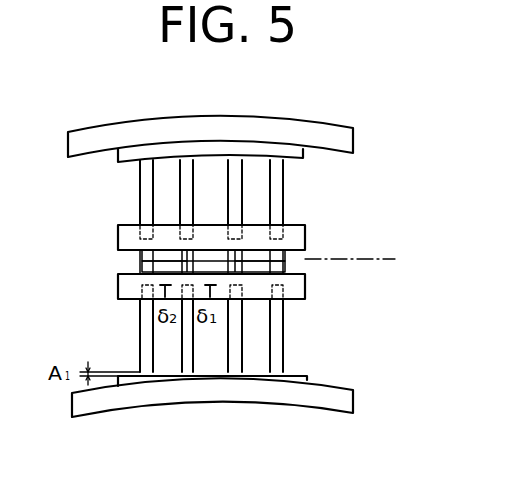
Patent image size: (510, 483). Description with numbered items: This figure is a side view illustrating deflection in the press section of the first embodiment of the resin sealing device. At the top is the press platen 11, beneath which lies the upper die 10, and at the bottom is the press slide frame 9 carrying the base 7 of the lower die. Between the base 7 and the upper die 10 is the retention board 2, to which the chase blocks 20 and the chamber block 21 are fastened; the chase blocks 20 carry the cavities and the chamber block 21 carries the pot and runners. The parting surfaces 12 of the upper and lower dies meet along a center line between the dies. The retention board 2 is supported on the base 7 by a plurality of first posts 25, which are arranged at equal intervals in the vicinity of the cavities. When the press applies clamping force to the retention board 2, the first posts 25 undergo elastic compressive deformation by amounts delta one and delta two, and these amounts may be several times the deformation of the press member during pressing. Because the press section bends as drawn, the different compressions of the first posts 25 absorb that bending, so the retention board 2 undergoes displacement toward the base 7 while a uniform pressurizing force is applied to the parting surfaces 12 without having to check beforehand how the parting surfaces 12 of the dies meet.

The retention board 2 is at (305, 288).
The base 7 is at (305, 375).
The press slide frame 9 is at (345, 401).
The upper die 10 is at (300, 238).
The press platen 11 is at (348, 142).
The parting surface 12 is at (373, 258).
The chase block 20 is at (155, 270).
The chamber block 21 is at (211, 265).
The first posts 25 is at (284, 339).